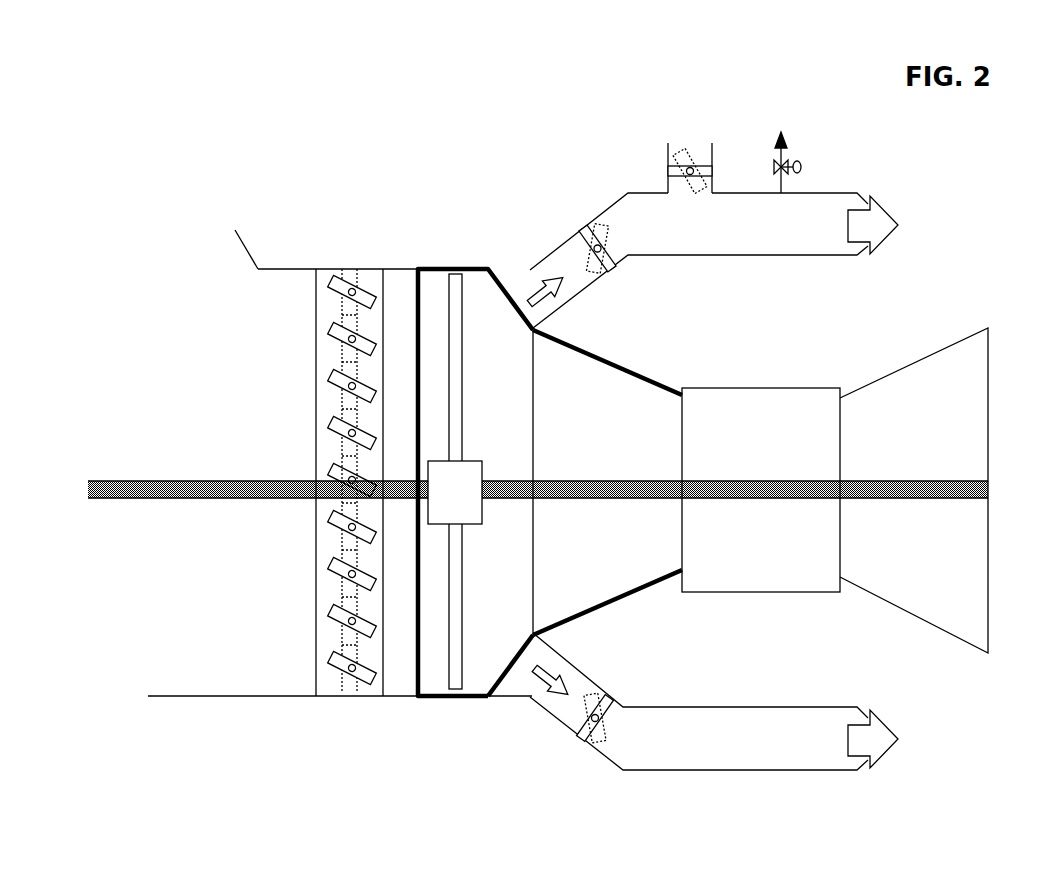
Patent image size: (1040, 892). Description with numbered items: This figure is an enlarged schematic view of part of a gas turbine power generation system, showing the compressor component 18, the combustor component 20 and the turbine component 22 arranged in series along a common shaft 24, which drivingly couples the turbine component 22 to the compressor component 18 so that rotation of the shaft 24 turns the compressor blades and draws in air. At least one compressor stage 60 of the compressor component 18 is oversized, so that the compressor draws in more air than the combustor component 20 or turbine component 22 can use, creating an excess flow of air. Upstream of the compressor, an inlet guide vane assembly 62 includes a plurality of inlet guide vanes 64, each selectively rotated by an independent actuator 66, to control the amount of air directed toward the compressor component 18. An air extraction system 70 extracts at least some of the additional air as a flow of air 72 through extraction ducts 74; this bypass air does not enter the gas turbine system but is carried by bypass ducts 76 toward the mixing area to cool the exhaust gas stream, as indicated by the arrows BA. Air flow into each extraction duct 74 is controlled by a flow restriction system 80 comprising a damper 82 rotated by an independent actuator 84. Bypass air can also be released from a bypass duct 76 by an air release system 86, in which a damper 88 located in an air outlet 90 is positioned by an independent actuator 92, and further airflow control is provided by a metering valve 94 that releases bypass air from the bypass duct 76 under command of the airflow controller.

The compressor component 18 is at (577, 442).
The combustor component 20 is at (749, 449).
The turbine component 22 is at (900, 449).
The shaft 24 is at (276, 478).
The compressor stage 60 is at (443, 290).
The inlet guide vane assembly 62 is at (316, 676).
The inlet guide vane 64 is at (338, 284).
The actuator 66 is at (354, 291).
The air extraction system 70 is at (509, 158).
The flow of air 72 is at (535, 290).
The extraction duct 74 is at (562, 310).
The bypass duct 76 is at (799, 237).
The flow restriction system 80 is at (612, 472).
The damper 82 is at (606, 262).
The actuator 84 is at (592, 250).
The air release system 86 is at (698, 168).
The damper 88 is at (677, 178).
The air outlet 90 is at (670, 135).
The actuator 92 is at (690, 166).
The metering valve 94 is at (788, 162).